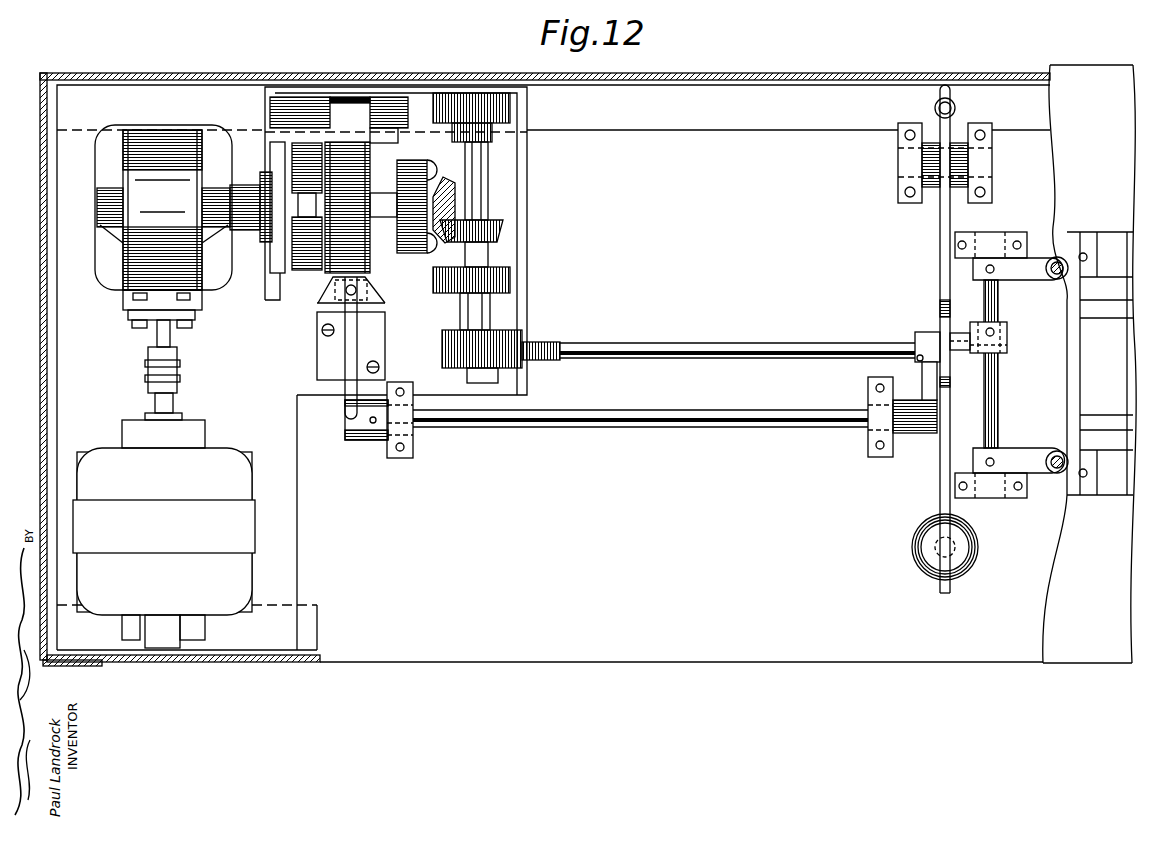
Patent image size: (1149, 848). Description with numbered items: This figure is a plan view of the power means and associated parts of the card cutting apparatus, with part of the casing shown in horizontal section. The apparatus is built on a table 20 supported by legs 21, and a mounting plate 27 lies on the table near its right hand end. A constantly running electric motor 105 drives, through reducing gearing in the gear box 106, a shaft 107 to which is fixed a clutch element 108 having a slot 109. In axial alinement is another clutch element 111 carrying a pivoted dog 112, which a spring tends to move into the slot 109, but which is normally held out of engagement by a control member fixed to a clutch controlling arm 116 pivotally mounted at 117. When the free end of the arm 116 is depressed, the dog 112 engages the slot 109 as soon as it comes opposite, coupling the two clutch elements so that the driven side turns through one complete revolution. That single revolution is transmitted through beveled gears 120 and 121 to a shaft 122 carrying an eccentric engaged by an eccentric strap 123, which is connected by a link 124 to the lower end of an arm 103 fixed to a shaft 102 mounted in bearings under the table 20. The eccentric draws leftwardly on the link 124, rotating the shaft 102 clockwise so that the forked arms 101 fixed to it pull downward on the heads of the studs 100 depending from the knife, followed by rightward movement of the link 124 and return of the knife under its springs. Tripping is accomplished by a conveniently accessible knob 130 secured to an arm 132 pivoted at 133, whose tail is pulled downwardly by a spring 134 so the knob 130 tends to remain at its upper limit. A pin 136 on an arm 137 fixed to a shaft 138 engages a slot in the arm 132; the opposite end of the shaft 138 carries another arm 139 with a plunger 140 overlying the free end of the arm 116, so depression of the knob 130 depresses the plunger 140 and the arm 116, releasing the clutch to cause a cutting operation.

The table 20 is at (1048, 605).
The legs 21 is at (88, 73).
The mounting plate 27 is at (1115, 495).
The studs 100 is at (1060, 258).
The forked arms 101 is at (1036, 277).
The shaft 102 is at (1000, 382).
The arm 103 is at (1010, 335).
The electric motor 105 is at (218, 458).
The gear box 106 is at (133, 192).
The shaft 107 is at (228, 210).
The clutch element 108 is at (248, 230).
The slot 109 is at (262, 184).
The clutch element 111 is at (360, 164).
The pivoted dog 112 is at (317, 203).
The clutch controlling arm 116 is at (313, 280).
The pivot 117 is at (318, 100).
The beveled gear 120 is at (450, 181).
The beveled gear 121 is at (495, 228).
The shaft 122 is at (490, 318).
The eccentric strap 123 is at (445, 342).
The link 124 is at (714, 346).
The knob 130 is at (978, 545).
The arm 132 is at (940, 445).
The pivot 133 is at (995, 163).
The spring 134 is at (960, 110).
The pin 136 is at (958, 334).
The arm 137 is at (927, 372).
The shaft 138 is at (809, 426).
The arm 139 is at (350, 342).
The plunger 140 is at (363, 279).